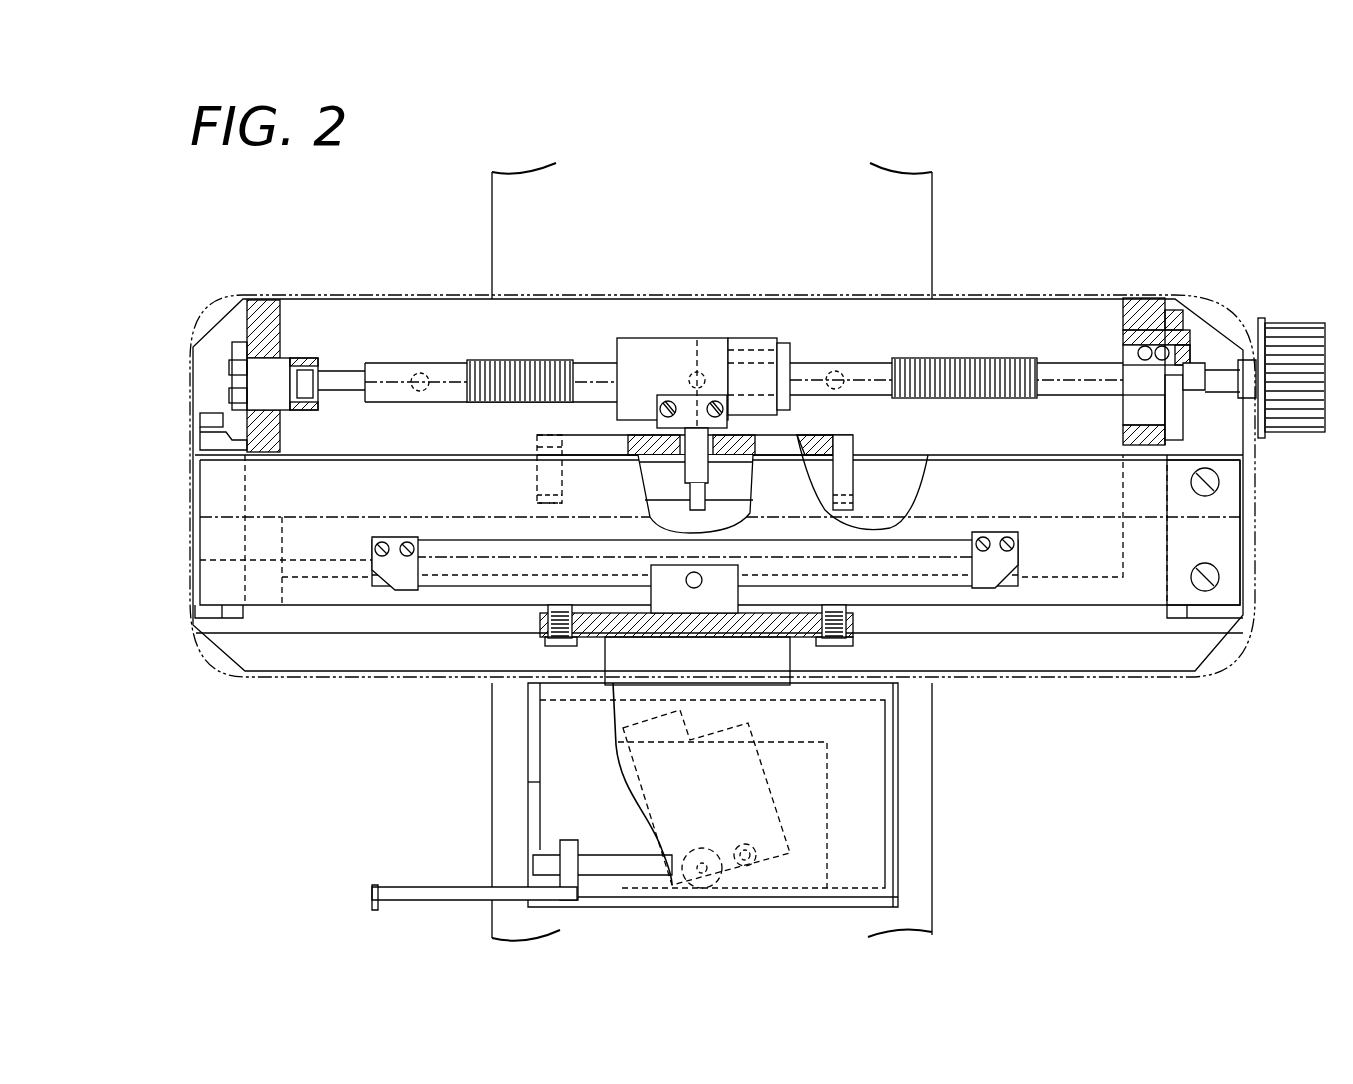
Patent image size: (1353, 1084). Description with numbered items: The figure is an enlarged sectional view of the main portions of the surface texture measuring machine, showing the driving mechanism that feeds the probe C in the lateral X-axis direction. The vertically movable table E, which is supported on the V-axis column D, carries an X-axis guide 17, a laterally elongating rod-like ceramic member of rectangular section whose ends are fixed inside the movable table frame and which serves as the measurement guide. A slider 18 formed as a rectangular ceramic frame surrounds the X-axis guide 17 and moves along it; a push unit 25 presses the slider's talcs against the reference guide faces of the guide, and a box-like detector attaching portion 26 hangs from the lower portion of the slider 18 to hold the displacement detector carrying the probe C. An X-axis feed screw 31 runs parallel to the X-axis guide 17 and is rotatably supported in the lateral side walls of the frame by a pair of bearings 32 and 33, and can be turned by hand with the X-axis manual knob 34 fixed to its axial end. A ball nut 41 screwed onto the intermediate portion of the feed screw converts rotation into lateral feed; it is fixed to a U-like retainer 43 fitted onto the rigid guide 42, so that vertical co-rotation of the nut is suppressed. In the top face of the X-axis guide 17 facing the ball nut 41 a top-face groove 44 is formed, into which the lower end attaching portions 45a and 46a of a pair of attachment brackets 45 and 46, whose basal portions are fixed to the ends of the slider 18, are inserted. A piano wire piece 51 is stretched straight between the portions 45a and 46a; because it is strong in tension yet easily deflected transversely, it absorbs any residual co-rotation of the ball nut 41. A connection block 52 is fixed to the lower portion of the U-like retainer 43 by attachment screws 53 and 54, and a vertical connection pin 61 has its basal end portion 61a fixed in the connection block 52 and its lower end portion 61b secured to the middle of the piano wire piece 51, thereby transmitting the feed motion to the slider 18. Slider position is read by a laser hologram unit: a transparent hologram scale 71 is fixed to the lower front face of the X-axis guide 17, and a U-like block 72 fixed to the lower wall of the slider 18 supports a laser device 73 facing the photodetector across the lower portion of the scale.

The X-axis guide 17 is at (1078, 527).
The slider 18 is at (618, 718).
The push unit 25 is at (548, 638).
The detector attaching portion 26 is at (878, 752).
The X-axis feed screw 31 is at (500, 367).
The bearing 32 is at (253, 385).
The bearing 33 is at (1148, 325).
The X-axis manual knob 34 is at (1285, 325).
The ball nut 41 is at (770, 380).
The rigid guide 42 is at (953, 378).
The U-like retainer 43 is at (675, 345).
The top-face groove 44 is at (925, 465).
The attachment bracket 45 is at (545, 447).
The lower end attaching portion 45a is at (545, 488).
The attachment bracket 46 is at (855, 447).
The lower end attaching portion 46a is at (850, 490).
The piano wire piece 51 is at (668, 493).
The connection block 52 is at (675, 397).
The attachment screw 53 is at (655, 405).
The attachment screw 54 is at (738, 398).
The vertical connection pin 61 is at (710, 452).
The basal end portion 61a is at (697, 395).
The lower end portion 61b is at (708, 497).
The transparent hologram scale 71 is at (925, 545).
The U-like block 72 is at (712, 602).
The laser device 73 is at (694, 590).
The probe C is at (425, 893).
The V-axis column D is at (503, 205).
The vertically movable table E is at (366, 294).